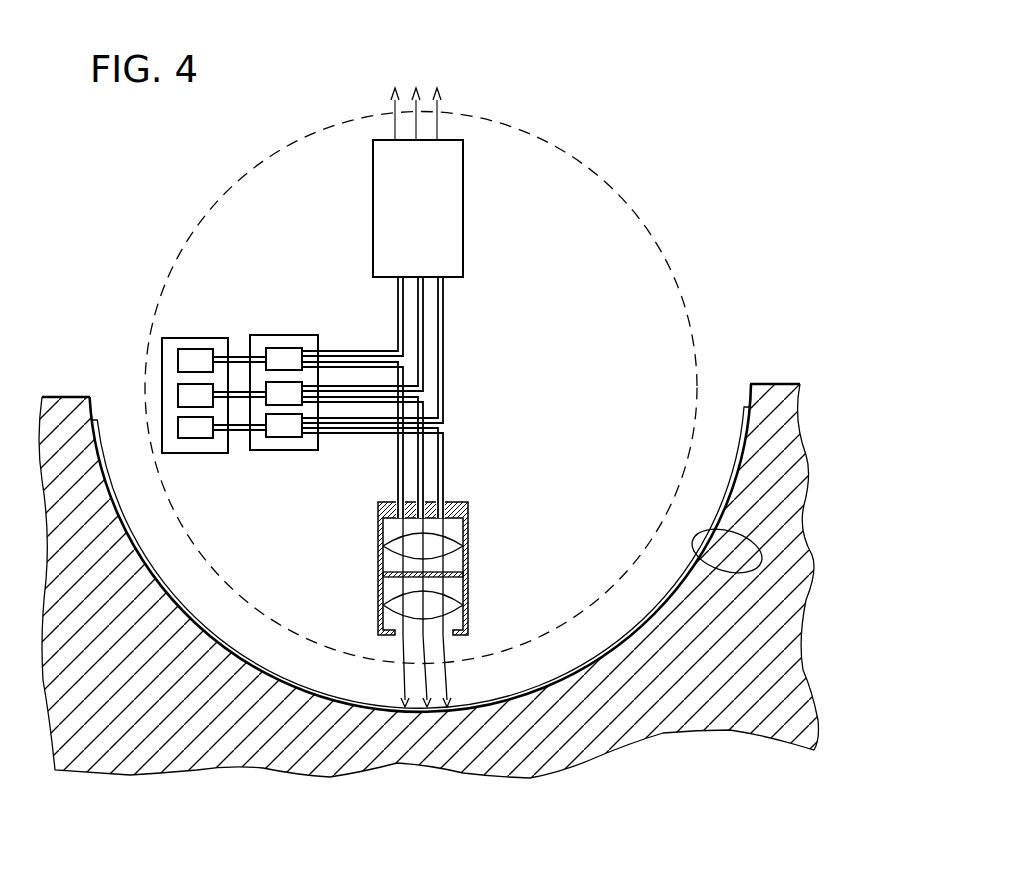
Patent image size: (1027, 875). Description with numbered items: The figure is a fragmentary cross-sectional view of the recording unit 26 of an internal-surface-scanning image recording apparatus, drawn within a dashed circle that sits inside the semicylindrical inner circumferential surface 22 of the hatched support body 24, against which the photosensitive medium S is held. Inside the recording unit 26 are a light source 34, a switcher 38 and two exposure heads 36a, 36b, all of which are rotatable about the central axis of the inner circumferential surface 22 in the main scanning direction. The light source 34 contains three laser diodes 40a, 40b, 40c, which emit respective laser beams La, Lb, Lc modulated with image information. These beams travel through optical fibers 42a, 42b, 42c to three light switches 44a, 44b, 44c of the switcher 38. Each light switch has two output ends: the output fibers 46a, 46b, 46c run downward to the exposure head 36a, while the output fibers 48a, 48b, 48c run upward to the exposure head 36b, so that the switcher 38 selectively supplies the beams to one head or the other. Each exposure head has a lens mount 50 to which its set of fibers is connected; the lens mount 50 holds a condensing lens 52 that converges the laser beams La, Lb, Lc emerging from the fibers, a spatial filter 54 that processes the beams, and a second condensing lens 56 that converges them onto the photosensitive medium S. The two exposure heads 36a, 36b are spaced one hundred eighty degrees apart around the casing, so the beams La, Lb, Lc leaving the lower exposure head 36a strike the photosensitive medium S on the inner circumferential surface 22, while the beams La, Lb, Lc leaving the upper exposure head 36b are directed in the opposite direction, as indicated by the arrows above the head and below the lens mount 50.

The semicylindrical inner circumferential surface 22 is at (762, 560).
The wall body 24 is at (788, 512).
The recording unit 26 is at (688, 293).
The light source 34 is at (196, 338).
The exposure head 36a is at (430, 558).
The exposure head 36b is at (463, 190).
The switcher 38 is at (283, 335).
The laser diode 40a is at (178, 361).
The laser diode 40b is at (178, 395).
The laser diode 40c is at (178, 428).
The optical fiber 42a is at (240, 357).
The optical fiber 42b is at (236, 398).
The optical fiber 42c is at (245, 431).
The light switch 44a is at (290, 354).
The light switch 44b is at (290, 396).
The light switch 44c is at (285, 430).
The optical fiber 46a is at (403, 375).
The optical fiber 46b is at (423, 407).
The optical fiber 46c is at (443, 440).
The optical fiber 48a is at (397, 300).
The optical fiber 48b is at (423, 298).
The optical fiber 48c is at (443, 327).
The lens mount 50 is at (468, 505).
The condensing lens 52 is at (383, 546).
The spatial filter 54 is at (468, 580).
The condensing lens 56 is at (383, 605).
The photosensitive medium S is at (724, 508).
The laser beam La is at (393, 128).
The laser beam Lb is at (427, 96).
The laser beam Lc is at (440, 129).